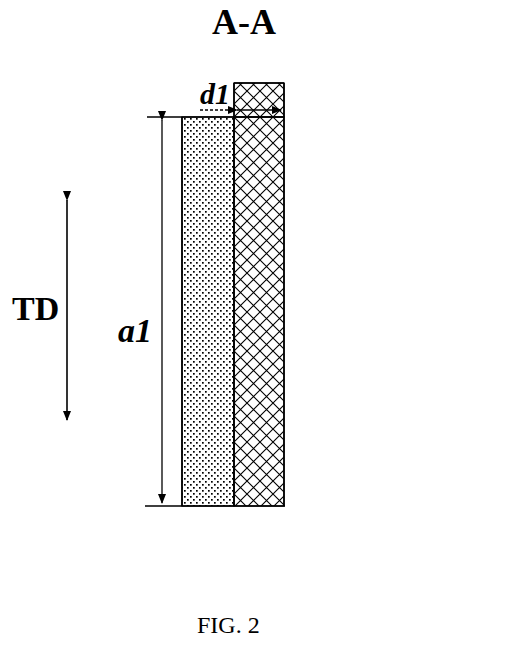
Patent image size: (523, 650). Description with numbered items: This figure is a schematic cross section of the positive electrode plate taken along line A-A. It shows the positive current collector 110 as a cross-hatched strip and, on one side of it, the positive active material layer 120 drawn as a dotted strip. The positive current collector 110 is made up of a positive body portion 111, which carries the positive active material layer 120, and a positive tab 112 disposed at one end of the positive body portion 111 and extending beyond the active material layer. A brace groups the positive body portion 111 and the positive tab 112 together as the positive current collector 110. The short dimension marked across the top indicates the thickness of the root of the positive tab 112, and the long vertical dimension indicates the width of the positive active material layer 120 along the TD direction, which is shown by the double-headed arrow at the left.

The positive current collector 110 is at (359, 294).
The positive body portion 111 is at (283, 214).
The positive tab 112 is at (283, 100).
The positive active material layer 120 is at (212, 426).